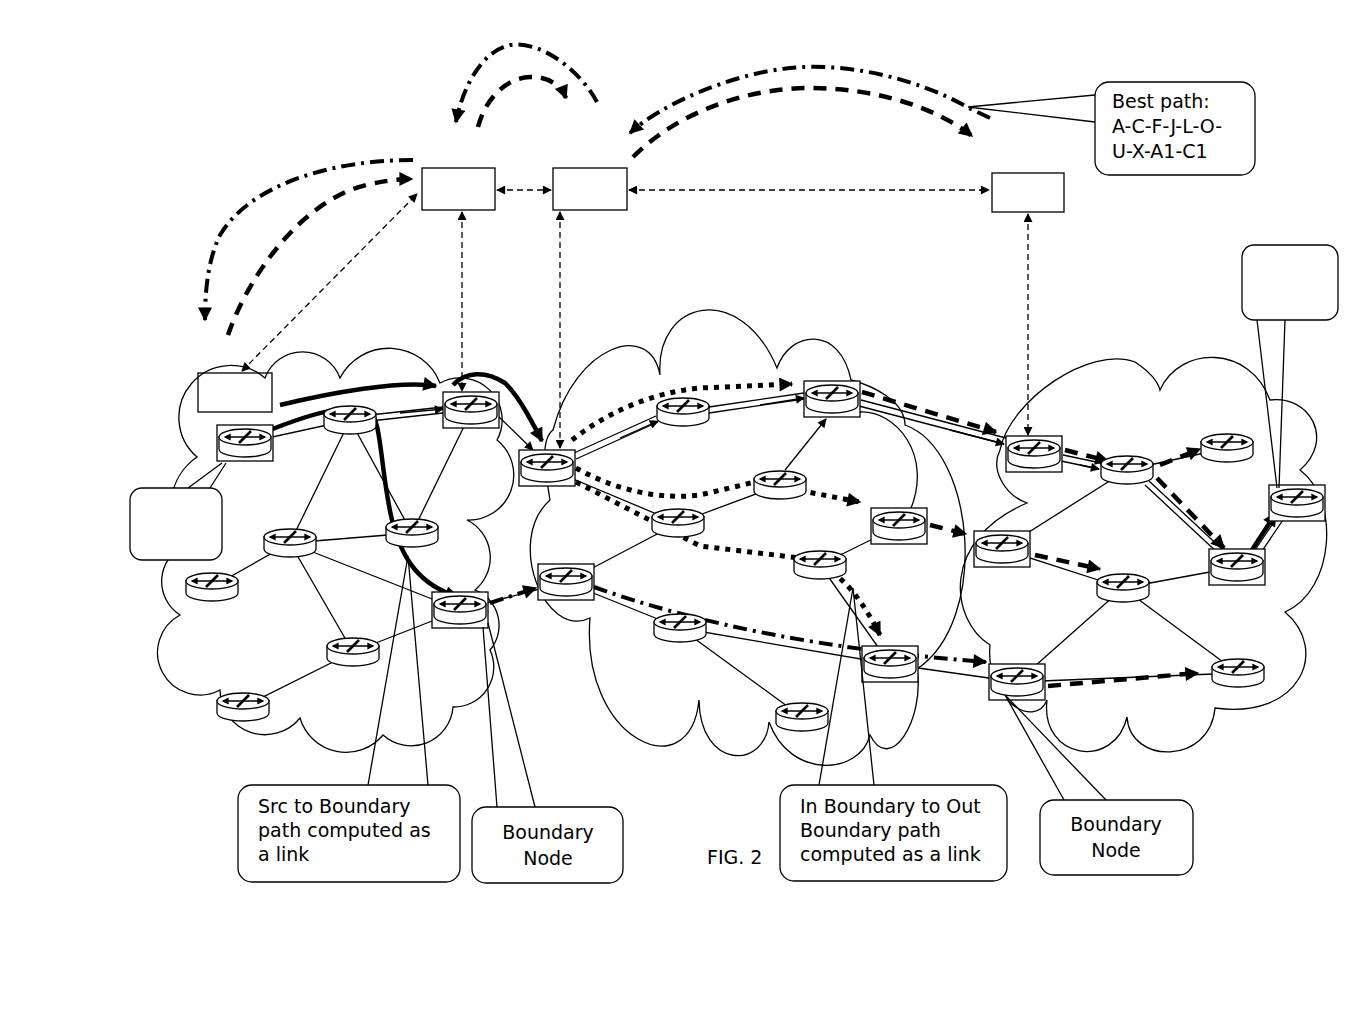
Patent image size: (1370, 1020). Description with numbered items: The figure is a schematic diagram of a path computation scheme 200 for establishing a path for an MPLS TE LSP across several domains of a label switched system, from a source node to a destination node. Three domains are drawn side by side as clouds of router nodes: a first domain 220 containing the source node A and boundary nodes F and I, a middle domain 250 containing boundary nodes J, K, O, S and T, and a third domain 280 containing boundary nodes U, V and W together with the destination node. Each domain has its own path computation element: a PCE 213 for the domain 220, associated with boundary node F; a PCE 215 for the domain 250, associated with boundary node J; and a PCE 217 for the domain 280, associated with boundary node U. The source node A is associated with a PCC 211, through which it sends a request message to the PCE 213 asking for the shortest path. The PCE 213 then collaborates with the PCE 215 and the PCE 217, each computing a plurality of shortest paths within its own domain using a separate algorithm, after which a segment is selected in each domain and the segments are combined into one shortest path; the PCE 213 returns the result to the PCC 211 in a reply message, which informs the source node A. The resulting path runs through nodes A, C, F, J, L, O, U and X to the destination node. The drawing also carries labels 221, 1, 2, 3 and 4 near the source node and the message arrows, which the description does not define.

The path computation scheme 200 is at (238, 144).
The PCC 211 is at (205, 373).
The PCE 213 is at (455, 168).
The PCE 215 is at (598, 168).
The PCE 217 is at (1024, 173).
The domain 220 is at (338, 348).
The source node 221 is at (178, 486).
The domain 250 is at (720, 303).
The domain 280 is at (1128, 367).
The path computation request message 1 is at (309, 247).
The path computation request message 2 is at (526, 85).
The path computation request message 3 is at (802, 122).
The path computation reply message 4 is at (810, 93).